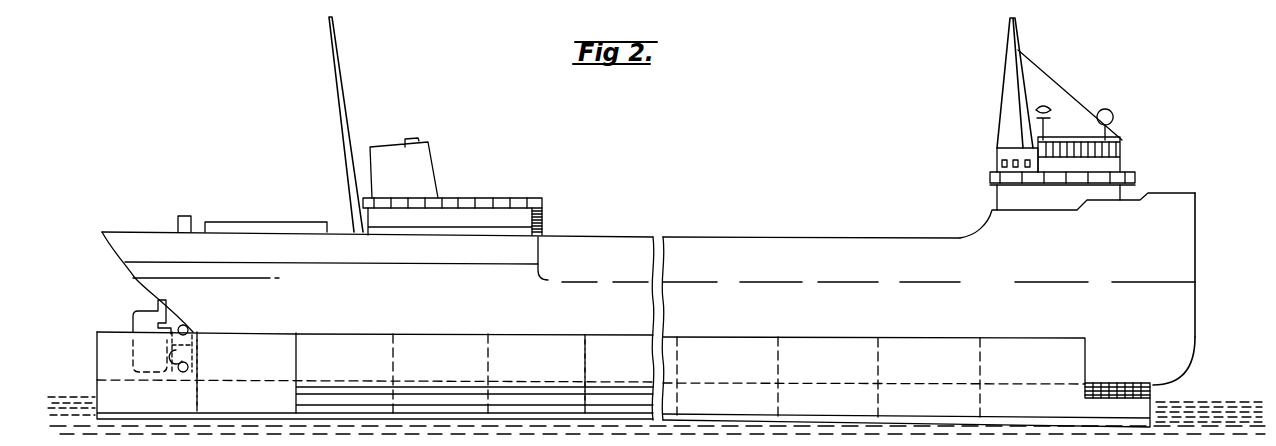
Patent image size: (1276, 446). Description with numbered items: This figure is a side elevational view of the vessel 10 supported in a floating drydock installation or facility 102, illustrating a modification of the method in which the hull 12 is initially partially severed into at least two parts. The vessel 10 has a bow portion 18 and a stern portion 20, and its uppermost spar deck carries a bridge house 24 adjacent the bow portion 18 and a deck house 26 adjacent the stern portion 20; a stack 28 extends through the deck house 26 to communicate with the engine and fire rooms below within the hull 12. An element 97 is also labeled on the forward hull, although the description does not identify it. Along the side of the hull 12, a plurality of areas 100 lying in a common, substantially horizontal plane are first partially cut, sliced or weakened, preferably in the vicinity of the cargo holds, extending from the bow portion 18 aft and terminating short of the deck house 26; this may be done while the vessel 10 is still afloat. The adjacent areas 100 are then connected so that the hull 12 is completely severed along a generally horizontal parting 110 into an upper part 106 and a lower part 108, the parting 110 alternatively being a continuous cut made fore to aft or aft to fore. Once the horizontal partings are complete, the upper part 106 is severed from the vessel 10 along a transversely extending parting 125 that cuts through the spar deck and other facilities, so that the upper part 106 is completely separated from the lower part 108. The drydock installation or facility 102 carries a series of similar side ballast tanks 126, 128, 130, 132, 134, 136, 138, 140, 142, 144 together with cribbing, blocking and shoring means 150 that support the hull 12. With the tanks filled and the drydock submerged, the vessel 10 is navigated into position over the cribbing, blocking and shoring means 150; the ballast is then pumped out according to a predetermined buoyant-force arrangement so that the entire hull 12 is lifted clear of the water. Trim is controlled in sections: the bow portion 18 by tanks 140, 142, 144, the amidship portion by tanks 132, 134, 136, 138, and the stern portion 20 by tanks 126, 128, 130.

The vessel 10 is at (700, 196).
The hull 12 is at (747, 232).
The bow portion 18 is at (1185, 252).
The stern portion 20 is at (243, 248).
The bridge house 24 is at (1122, 173).
The deck house 26 is at (503, 220).
The stack 28 is at (430, 190).
The sheer strake 97 is at (305, 242).
The areas 100 is at (690, 278).
The drydock installation or facility 102 is at (113, 298).
The upper part 106 is at (603, 245).
The lower part 108 is at (553, 324).
The parting 110 is at (624, 280).
The transversely extending parting 125 is at (540, 237).
The side ballast tank 126 is at (136, 409).
The side ballast tank 128 is at (236, 409).
The side ballast tank 130 is at (358, 373).
The side ballast tank 132 is at (455, 373).
The side ballast tank 134 is at (553, 374).
The side ballast tank 136 is at (611, 376).
The side ballast tank 138 is at (718, 413).
The side ballast tank 140 is at (818, 413).
The side ballast tank 142 is at (916, 415).
The side ballast tank 144 is at (1023, 415).
The cribbing, blocking and shoring means 150 is at (1152, 393).